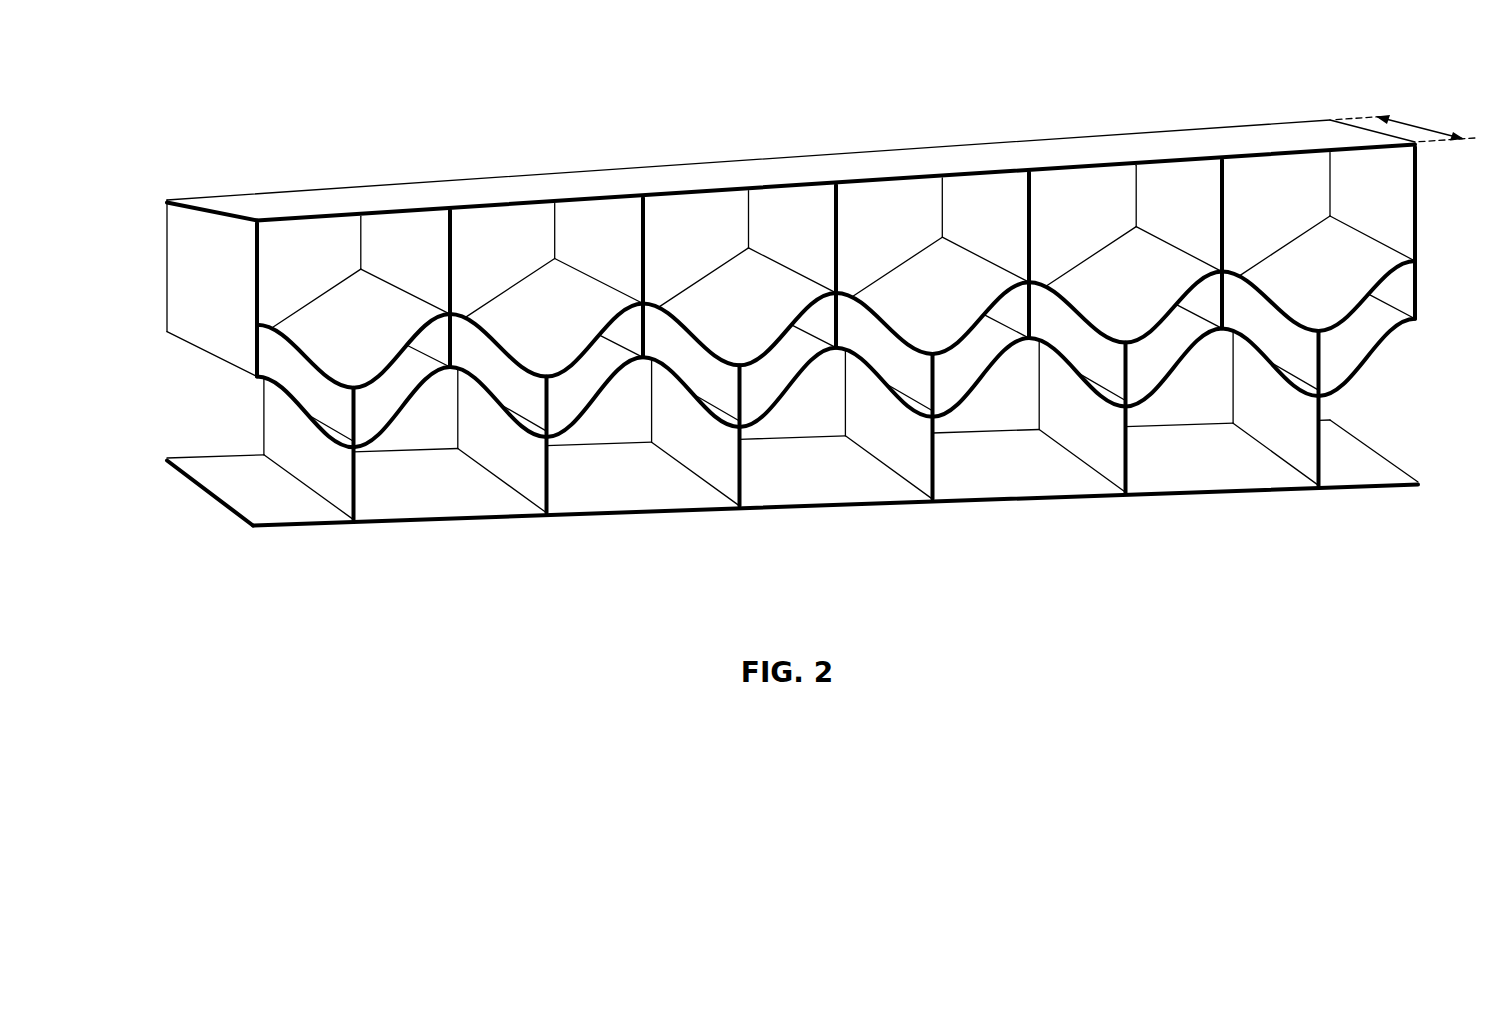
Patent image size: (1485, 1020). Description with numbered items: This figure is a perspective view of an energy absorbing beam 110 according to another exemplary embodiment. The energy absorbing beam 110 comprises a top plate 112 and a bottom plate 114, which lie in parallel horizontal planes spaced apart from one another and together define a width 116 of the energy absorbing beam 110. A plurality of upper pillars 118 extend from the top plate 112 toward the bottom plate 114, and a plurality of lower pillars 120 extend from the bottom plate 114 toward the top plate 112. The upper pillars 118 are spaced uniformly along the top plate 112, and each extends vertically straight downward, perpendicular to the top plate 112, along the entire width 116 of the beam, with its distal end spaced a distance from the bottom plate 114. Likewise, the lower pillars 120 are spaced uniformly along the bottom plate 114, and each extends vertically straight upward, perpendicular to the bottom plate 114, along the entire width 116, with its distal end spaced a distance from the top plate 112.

The energy absorbing beam 110 is at (452, 565).
The top plate 112 is at (769, 169).
The bottom plate 114 is at (826, 489).
The width 116 is at (1418, 126).
The upper pillars 118 is at (190, 258).
The lower pillars 120 is at (283, 440).